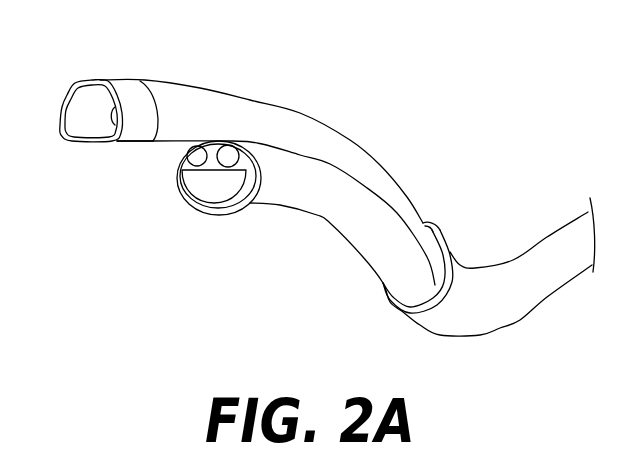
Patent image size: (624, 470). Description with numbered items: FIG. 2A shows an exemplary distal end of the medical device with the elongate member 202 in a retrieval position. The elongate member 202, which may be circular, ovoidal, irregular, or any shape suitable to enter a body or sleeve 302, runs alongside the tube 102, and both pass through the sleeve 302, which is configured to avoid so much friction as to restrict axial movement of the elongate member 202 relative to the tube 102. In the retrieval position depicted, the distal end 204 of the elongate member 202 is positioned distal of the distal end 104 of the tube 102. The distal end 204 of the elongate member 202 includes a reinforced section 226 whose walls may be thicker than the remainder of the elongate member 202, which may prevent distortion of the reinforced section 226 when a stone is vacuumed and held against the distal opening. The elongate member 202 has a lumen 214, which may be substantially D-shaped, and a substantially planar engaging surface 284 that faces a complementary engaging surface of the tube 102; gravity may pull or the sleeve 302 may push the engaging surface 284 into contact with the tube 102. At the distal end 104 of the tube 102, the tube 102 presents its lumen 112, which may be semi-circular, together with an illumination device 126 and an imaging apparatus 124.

The tube 102 is at (370, 263).
The distal end of tube 104 is at (222, 214).
The lumen 112 is at (210, 188).
The imaging apparatus 124 is at (229, 157).
The illumination device 126 is at (195, 152).
The elongate member 202 is at (328, 124).
The distal end of elongate member 204 is at (62, 102).
The lumen of elongate member 214 is at (83, 125).
The reinforced section 226 is at (107, 80).
The engaging surface 284 is at (122, 142).
The sleeve 302 is at (520, 254).